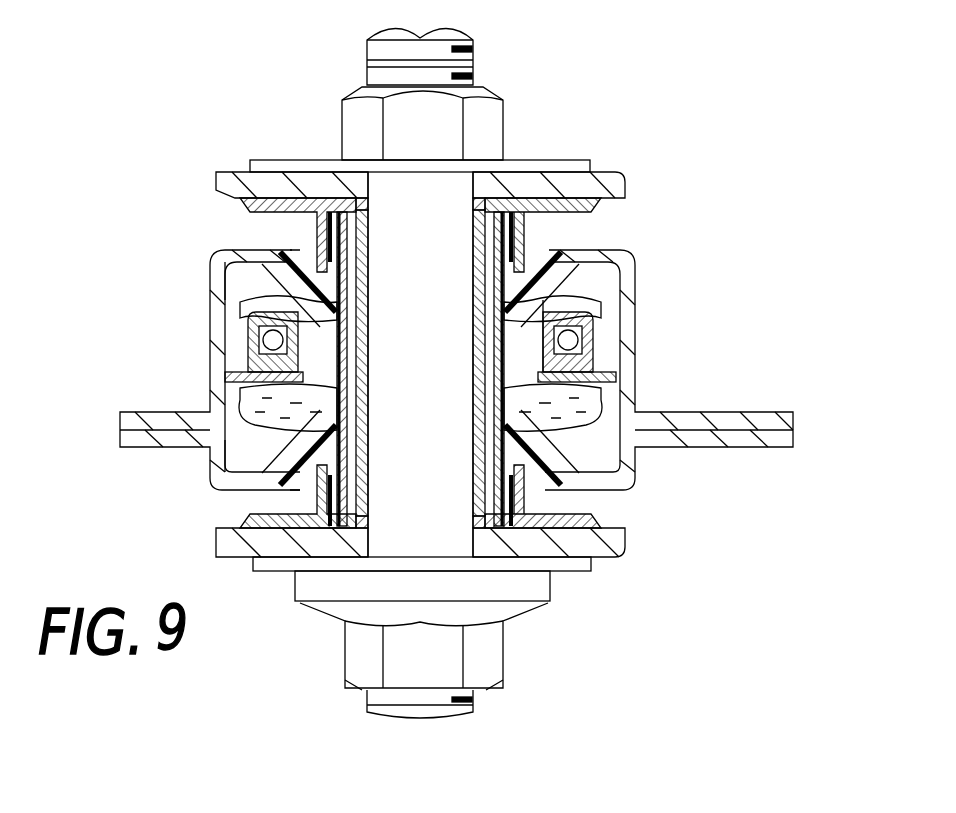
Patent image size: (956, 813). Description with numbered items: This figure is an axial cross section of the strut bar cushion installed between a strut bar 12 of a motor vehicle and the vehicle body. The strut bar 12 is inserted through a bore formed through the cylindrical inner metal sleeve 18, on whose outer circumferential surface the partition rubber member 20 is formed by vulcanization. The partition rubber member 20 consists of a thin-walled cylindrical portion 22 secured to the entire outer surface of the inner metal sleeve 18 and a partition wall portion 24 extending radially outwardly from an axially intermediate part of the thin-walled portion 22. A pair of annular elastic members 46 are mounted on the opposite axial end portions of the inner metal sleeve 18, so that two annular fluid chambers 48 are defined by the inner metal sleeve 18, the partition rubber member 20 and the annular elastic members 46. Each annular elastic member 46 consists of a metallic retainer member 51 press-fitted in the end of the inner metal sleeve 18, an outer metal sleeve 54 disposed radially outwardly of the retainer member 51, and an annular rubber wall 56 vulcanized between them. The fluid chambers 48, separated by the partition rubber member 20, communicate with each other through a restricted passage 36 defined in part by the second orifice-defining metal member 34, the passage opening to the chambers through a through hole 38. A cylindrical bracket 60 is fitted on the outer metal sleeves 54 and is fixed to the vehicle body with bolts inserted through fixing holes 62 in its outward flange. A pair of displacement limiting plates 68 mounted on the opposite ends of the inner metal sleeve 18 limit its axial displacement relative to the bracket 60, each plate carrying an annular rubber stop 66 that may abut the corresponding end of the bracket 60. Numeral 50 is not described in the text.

The strut bar 12 is at (450, 65).
The inner metal sleeve 18 is at (362, 400).
The partition rubber member 20 is at (550, 303).
The thin-walled cylindrical portion 22 is at (497, 430).
The partition wall portion 24 is at (290, 300).
The second orifice-defining metal member 34 is at (600, 375).
The restricted passage 36 is at (236, 340).
The through hole 38 is at (580, 330).
The annular elastic member 46 is at (283, 236).
The fluid chamber 48 is at (230, 312).
The bolt shank 50 is at (473, 310).
The retainer member 51 is at (500, 192).
The outer metal sleeve 54 is at (226, 262).
The annular rubber wall 56 is at (555, 255).
The bracket 60 is at (683, 400).
The fixing holes 62 is at (742, 447).
The annular rubber stop 66 is at (565, 235).
The displacement limiting plate 68 is at (600, 183).